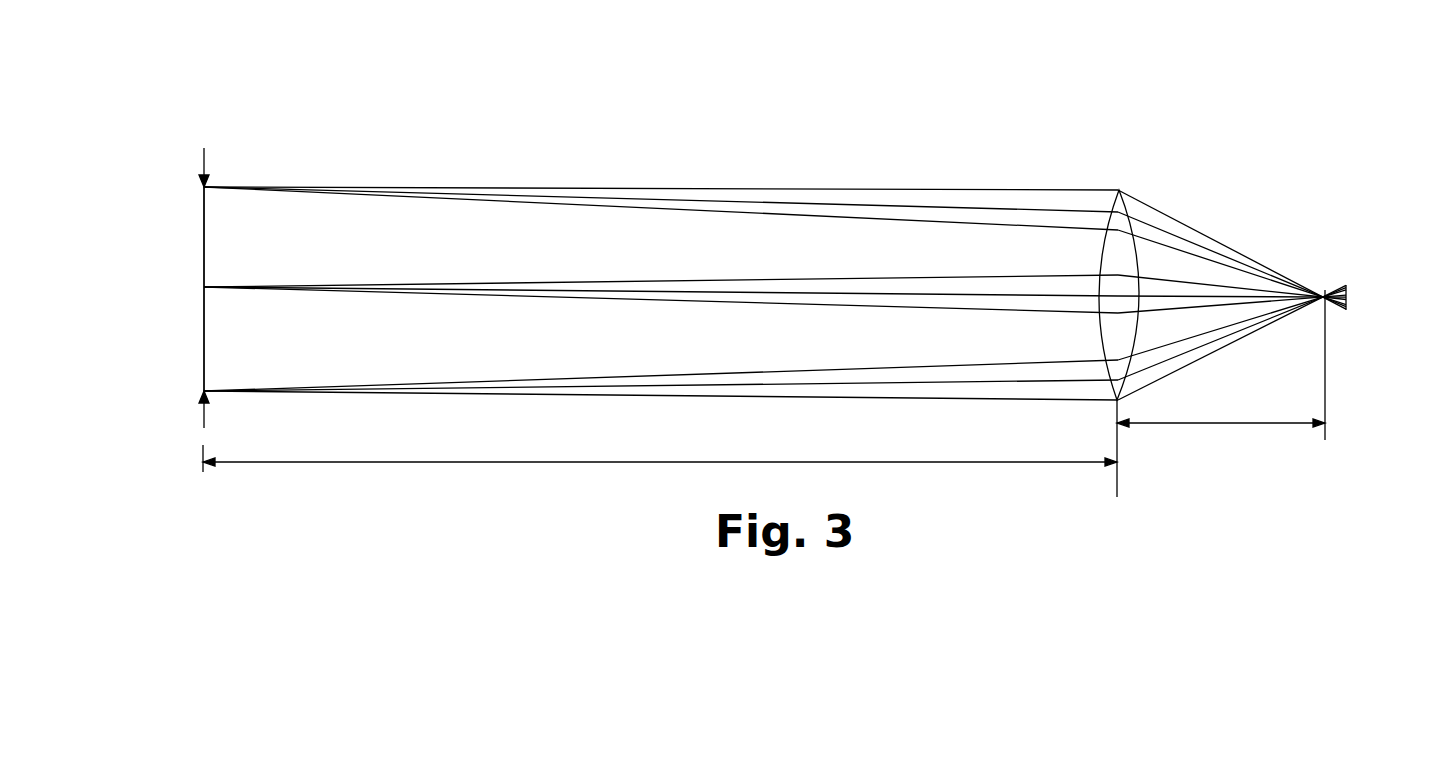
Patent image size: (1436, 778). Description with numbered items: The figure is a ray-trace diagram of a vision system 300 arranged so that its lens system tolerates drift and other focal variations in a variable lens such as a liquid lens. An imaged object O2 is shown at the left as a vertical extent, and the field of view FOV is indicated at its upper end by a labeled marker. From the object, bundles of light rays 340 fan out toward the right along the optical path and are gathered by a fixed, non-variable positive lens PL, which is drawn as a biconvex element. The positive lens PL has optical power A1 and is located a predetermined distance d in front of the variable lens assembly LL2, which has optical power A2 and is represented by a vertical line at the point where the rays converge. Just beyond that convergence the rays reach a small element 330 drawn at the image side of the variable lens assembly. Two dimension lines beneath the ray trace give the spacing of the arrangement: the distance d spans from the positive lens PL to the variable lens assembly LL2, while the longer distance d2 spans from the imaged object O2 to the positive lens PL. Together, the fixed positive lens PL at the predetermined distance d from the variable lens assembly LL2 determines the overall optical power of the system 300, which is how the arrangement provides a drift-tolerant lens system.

The vision system 300 is at (763, 280).
The image / sensor plane element 330 is at (1348, 298).
The light rays 340 is at (630, 368).
The field of view FOV is at (205, 160).
The imaged object O2 is at (196, 242).
The positive lens PL is at (1120, 190).
The variable lens assembly LL2 is at (1326, 289).
The distance d is at (1230, 423).
The object to lens distance d2 is at (552, 462).